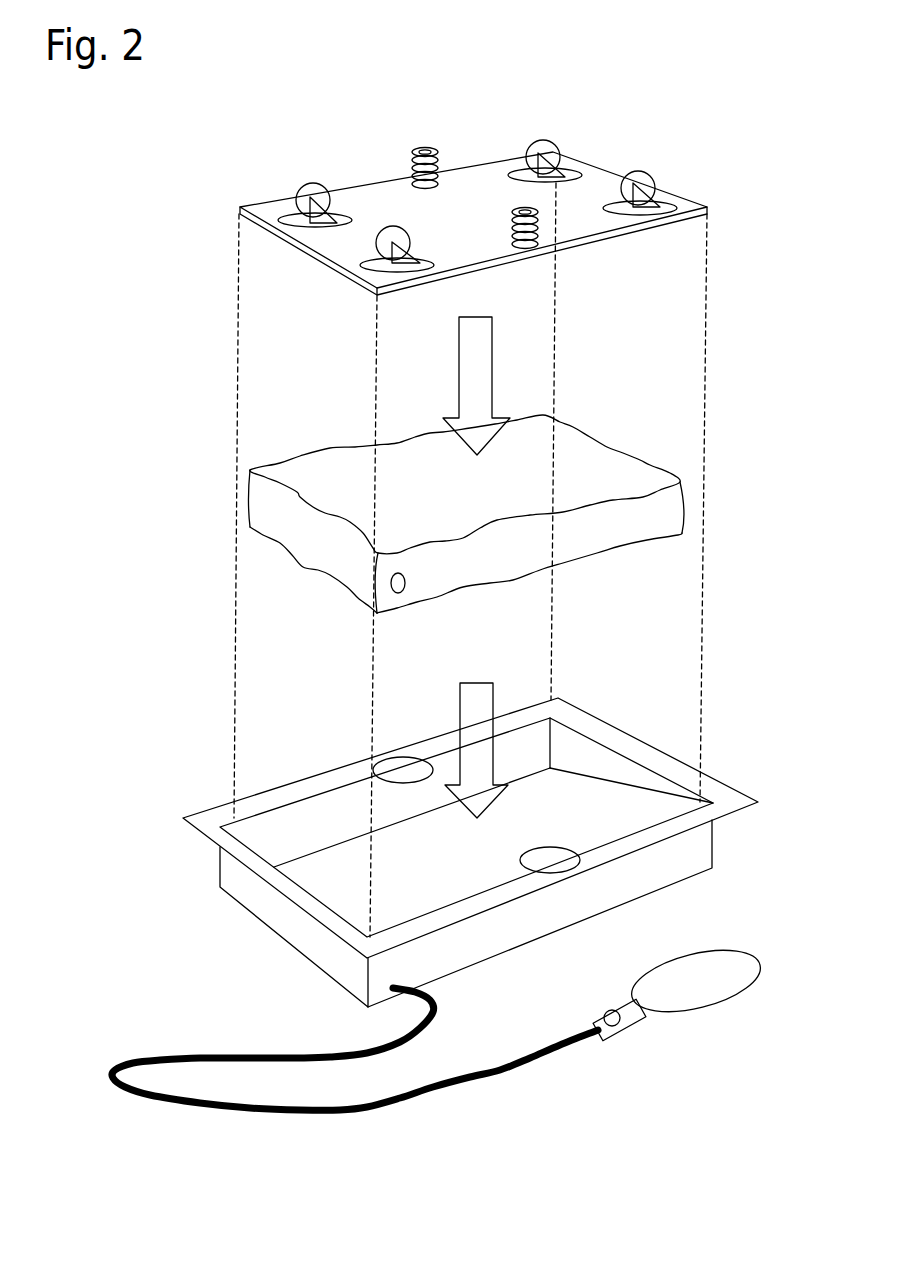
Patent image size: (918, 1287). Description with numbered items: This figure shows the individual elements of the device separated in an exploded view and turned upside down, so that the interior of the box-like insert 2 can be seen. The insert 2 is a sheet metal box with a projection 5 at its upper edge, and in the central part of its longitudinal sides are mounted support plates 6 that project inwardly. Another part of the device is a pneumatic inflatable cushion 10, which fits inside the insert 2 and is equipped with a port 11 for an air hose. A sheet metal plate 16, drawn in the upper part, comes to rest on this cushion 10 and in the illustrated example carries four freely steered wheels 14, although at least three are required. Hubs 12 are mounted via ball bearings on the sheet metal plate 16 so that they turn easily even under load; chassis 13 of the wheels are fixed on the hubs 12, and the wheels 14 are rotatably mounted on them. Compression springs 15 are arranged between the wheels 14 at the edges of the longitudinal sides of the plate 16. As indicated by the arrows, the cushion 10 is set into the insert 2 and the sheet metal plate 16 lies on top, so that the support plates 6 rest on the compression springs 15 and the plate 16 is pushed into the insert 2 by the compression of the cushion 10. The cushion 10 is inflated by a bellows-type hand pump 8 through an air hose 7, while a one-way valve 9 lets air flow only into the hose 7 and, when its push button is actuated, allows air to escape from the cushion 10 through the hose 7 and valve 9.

The box-like insert 2 is at (338, 883).
The projection 5 is at (208, 820).
The support plates 6 is at (403, 768).
The air hose 7 is at (447, 1082).
The hand pump 8 is at (723, 988).
The valve 9 is at (627, 1015).
The pneumatic inflatable cushion 10 is at (302, 527).
The port 11 is at (398, 592).
The hubs 12 is at (262, 211).
The chassis 13 is at (293, 213).
The freely steered wheels 14 is at (312, 185).
The compression springs 15 is at (413, 150).
The sheet metal plate 16 is at (467, 208).